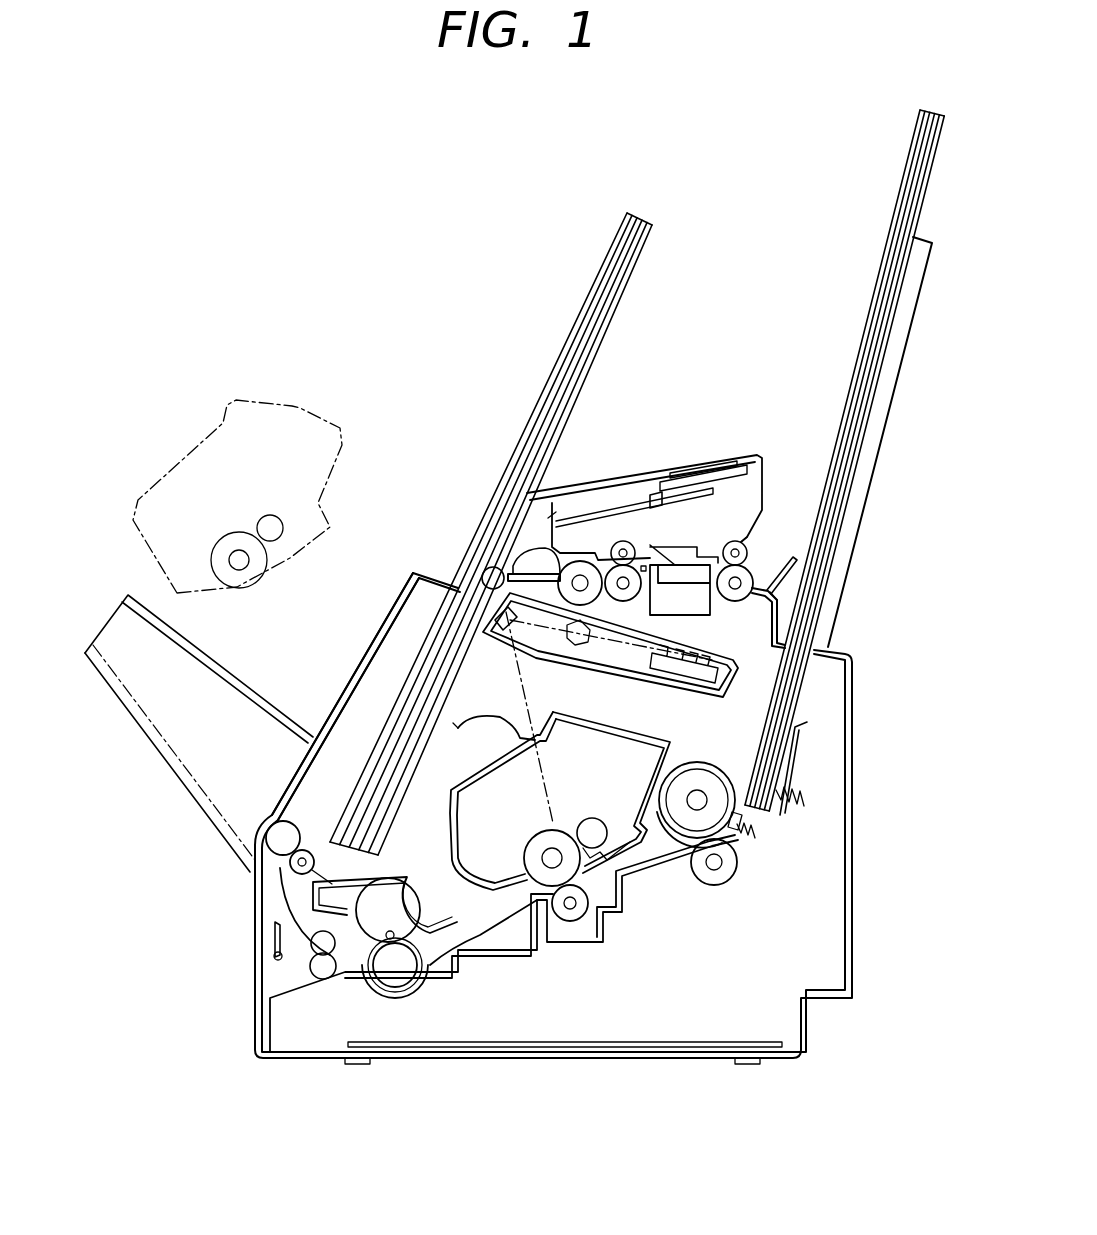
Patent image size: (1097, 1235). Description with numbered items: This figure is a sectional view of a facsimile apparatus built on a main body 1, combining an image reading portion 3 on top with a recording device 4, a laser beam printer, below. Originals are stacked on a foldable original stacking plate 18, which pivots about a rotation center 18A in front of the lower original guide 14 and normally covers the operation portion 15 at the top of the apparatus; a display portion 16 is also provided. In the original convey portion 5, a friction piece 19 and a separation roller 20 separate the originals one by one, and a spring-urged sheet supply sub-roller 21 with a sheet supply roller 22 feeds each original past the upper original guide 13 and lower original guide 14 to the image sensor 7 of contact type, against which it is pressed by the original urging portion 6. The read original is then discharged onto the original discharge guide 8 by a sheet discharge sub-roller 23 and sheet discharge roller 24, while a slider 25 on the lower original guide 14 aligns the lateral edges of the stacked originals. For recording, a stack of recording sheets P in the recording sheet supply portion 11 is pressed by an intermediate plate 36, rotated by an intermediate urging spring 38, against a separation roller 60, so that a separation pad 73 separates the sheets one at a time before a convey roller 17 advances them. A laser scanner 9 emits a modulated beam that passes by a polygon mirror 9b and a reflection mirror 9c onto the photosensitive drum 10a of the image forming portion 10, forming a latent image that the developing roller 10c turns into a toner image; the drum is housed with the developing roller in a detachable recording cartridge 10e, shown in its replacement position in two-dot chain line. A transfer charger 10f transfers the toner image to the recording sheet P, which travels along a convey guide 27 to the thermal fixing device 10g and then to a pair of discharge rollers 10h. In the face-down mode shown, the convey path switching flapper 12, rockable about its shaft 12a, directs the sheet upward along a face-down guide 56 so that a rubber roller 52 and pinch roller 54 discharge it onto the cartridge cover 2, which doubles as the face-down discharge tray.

The main body 1 is at (850, 650).
The cartridge cover 2 is at (382, 768).
The recording sheet P is at (928, 115).
The image reading portion 3 is at (612, 532).
The recording device 4 is at (670, 733).
The original convey portion 5 is at (737, 540).
The original urging portion 6 is at (688, 548).
The image sensor of contact type 7 is at (710, 603).
The original discharge guide 8 is at (785, 580).
The laser scanner 9 is at (632, 660).
The polygon mirror 9b is at (680, 668).
The reflection mirror 9c is at (493, 633).
The image forming portion 10 is at (573, 833).
The photosensitive drum 10a is at (528, 860).
The developing roller 10c is at (595, 822).
The recording cartridge 10e is at (300, 407).
The transfer charger 10f is at (570, 920).
The thermal fixing device 10g is at (390, 898).
The pair of discharge rollers 10h is at (318, 975).
The recording sheet supply portion 11 is at (892, 385).
The recording sheet convey path switching flapper 12 is at (280, 942).
The shaft 12a is at (276, 960).
The upper original guide 13 is at (648, 520).
The lower original guide 14 is at (533, 553).
The operation portion 15 is at (598, 540).
The display portion 16 is at (715, 475).
The convey roller 17 is at (715, 885).
The original stacking plate 18 is at (700, 470).
The rotation center 18A is at (482, 572).
The friction piece 19 is at (568, 535).
The separation roller 20 is at (455, 590).
The sheet supply sub-roller 21 is at (637, 543).
The sheet supply roller 22 is at (619, 602).
The sheet discharge sub-roller 23 is at (750, 553).
The sheet discharge roller 24 is at (776, 600).
The slider 25 is at (553, 563).
The convey guide 27 is at (510, 937).
The intermediate plate 36 is at (792, 750).
The intermediate urging spring 38 is at (804, 797).
The rubber roller 52 is at (280, 832).
The pinch roller 54 is at (305, 852).
The face-down guide 56 is at (277, 883).
The separation roller 60 is at (675, 812).
The separation pad 73 is at (760, 830).